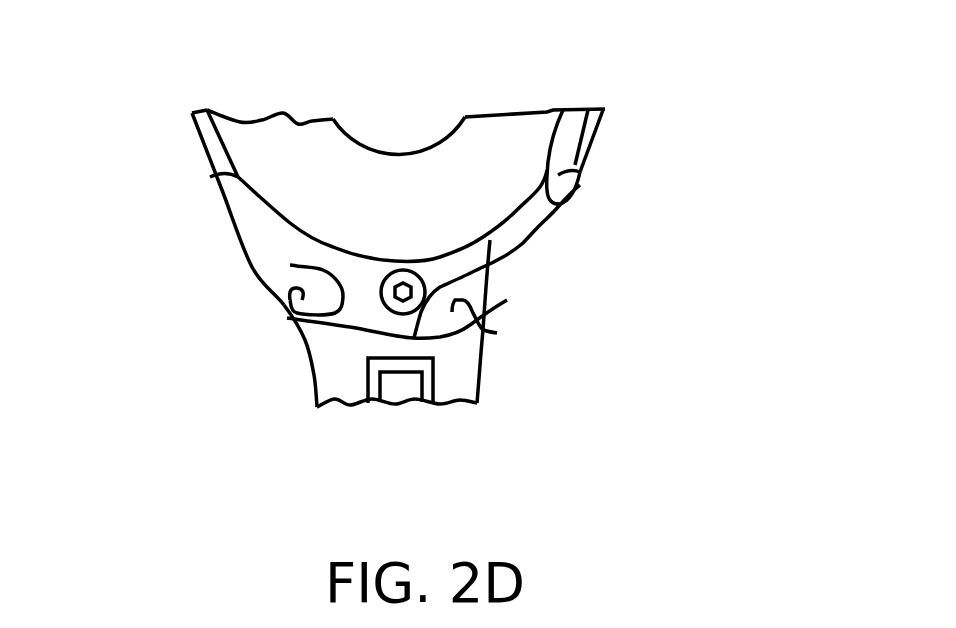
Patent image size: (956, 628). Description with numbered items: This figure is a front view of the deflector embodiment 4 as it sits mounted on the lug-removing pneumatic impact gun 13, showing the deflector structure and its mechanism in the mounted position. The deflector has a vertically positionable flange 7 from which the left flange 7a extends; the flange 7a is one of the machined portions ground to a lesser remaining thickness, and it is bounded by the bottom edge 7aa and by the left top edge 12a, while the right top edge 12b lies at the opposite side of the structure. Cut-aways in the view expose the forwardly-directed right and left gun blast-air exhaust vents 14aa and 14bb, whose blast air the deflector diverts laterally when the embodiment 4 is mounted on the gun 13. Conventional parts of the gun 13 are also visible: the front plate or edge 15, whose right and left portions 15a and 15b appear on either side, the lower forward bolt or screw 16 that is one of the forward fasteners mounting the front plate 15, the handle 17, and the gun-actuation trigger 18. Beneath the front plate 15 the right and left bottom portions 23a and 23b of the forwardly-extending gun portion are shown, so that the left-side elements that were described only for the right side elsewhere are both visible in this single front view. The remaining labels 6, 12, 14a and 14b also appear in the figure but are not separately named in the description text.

The embodiment 4 is at (220, 262).
The mounting bracket 6 is at (640, 65).
The vertically positionable flange 7 is at (282, 262).
The left flange 7a is at (243, 214).
The bottom edge 7aa is at (328, 322).
The strap 12 is at (420, 252).
The left top edge 12a is at (262, 197).
The right top edge 12b is at (563, 110).
The lug-removing pneumatic impact gun 13 is at (594, 136).
The left clamp member 14a is at (292, 295).
The right gun blast-air exhaust vent 14aa is at (342, 293).
The right clamp member 14b is at (497, 333).
The left gun blast-air exhaust vent 14bb is at (483, 266).
The front plate 15 is at (507, 300).
The right portion of front plate 15a is at (207, 136).
The left portion of front plate 15b is at (490, 240).
The lower forward bolt/screw 16 is at (392, 294).
The handle 17 is at (462, 373).
The gun-actuation trigger 18 is at (395, 390).
The right bottom portion of forwardly-extending gun portion 23a is at (290, 228).
The left bottom portion of forwardly-extending gun portion 23b is at (580, 185).